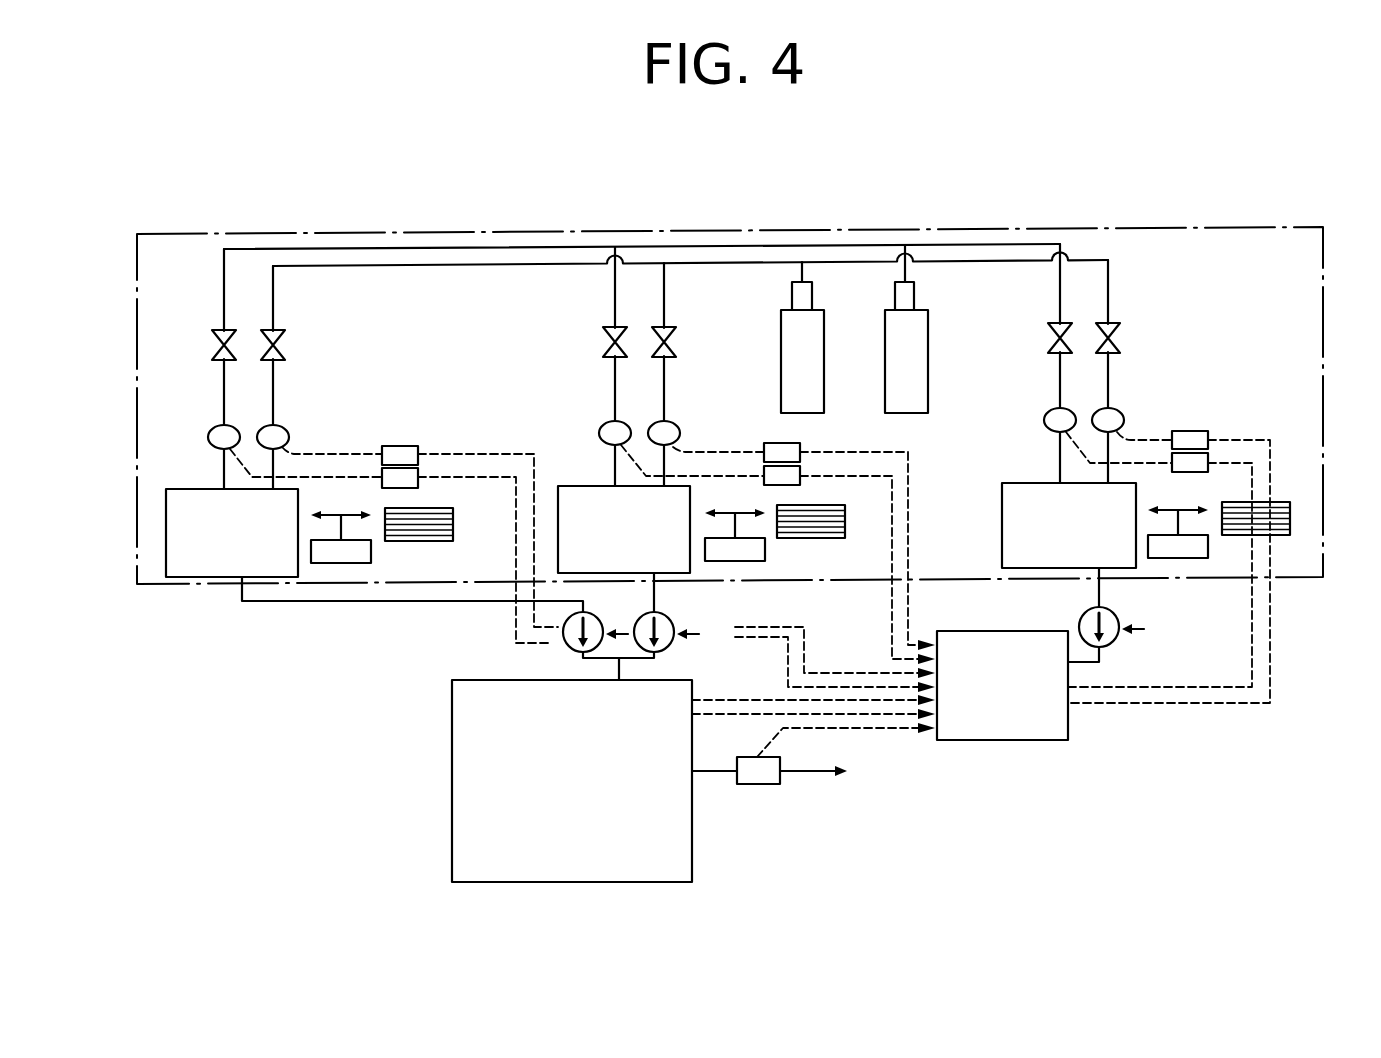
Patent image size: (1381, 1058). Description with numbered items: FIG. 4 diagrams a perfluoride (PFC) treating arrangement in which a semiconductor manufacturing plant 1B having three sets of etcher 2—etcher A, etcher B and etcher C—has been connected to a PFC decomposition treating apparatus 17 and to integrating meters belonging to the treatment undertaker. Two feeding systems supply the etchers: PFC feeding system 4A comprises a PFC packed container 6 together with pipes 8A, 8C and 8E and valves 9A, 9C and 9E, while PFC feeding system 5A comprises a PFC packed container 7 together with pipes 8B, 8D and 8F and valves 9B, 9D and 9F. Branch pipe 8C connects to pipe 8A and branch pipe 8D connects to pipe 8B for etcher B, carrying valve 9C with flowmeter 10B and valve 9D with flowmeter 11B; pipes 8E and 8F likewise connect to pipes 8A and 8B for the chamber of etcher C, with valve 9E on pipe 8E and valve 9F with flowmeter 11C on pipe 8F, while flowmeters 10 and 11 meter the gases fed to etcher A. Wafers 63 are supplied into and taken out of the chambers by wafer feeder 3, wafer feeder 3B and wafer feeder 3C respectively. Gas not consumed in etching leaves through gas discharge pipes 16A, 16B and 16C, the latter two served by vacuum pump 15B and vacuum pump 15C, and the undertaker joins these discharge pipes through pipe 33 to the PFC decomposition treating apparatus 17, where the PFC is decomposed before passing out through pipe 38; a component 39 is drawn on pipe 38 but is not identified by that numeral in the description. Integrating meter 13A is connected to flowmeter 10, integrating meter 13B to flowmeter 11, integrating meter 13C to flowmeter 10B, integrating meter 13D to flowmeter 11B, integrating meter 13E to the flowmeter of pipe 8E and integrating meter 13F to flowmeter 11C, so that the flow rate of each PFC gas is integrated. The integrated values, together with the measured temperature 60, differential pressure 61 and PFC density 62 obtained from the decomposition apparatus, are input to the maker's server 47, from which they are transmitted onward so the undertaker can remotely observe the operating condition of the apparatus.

The semiconductor manufacturing plant 1B is at (972, 230).
The etcher 2 is at (184, 580).
The wafer feeder 3 is at (767, 556).
The wafer feeder 3B is at (333, 565).
The wafer feeder 3C is at (1190, 558).
The PFC feeding system 4A is at (467, 266).
The PFC feeding system 5A is at (470, 248).
The PFC packed container 6 is at (826, 332).
The PFC packed container 7 is at (928, 332).
The pipe 8A is at (666, 297).
The pipe 8B is at (612, 289).
The pipe 8C is at (274, 297).
The pipe 8D is at (222, 297).
The pipe 8E is at (1109, 292).
The pipe 8F is at (1059, 292).
The valve 9A is at (677, 342).
The valve 9B is at (600, 342).
The valve 9C is at (287, 345).
The valve 9D is at (212, 345).
The valve 9E is at (1121, 339).
The valve 9F is at (1048, 339).
The flowmeter 10 is at (675, 425).
The flowmeter 10B is at (288, 428).
The flowmeter 11 is at (605, 424).
The flowmeter 11B is at (208, 436).
The flowmeter 11C is at (1045, 418).
The integrating meter 13A is at (778, 443).
The integrating meter 13B is at (800, 468).
The integrating meter 13C is at (397, 446).
The integrating meter 13D is at (423, 468).
The integrating meter 13E is at (1190, 431).
The integrating meter 13F is at (1210, 460).
The vacuum pump 15B is at (565, 648).
The vacuum pump 15C is at (1112, 612).
The gas discharge pipe 16A is at (658, 597).
The gas discharge pipe 16B is at (265, 604).
The gas discharge pipe 16C is at (1105, 652).
The PFC decomposition treating apparatus 17 is at (452, 845).
The pipe 33 is at (618, 663).
The pipe 38 is at (718, 773).
The gas analyzer 39 is at (765, 786).
The server 47 is at (1010, 742).
The measured value of temperature 60 is at (738, 700).
The measured value of differential pressure 61 is at (846, 716).
The PFC density 62 is at (891, 730).
The wafers 63 is at (426, 545).